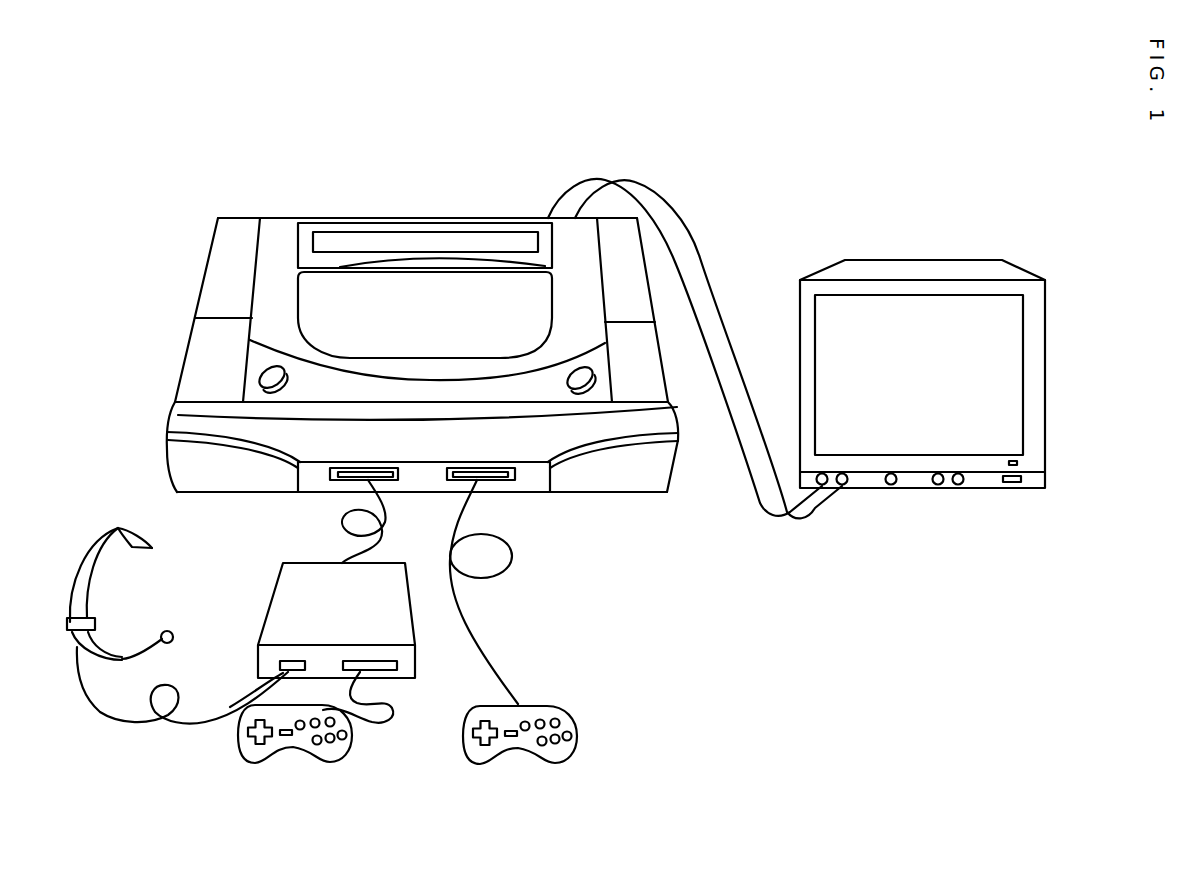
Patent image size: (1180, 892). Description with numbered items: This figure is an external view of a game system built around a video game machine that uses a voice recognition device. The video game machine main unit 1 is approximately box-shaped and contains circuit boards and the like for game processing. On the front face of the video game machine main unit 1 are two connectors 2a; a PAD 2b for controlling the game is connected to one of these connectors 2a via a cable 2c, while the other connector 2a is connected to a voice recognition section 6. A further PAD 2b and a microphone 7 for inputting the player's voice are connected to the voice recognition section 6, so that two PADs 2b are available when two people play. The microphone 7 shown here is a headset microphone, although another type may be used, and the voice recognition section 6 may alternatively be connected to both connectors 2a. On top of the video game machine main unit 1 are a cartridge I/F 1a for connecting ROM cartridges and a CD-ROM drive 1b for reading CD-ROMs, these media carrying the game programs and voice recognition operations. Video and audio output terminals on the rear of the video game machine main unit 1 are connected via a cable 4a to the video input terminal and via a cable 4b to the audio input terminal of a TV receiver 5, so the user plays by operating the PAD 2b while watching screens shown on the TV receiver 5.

The video game machine main unit 1 is at (172, 422).
The cartridge I/F 1a is at (340, 237).
The CD-ROM drive 1b is at (507, 285).
The connector 2a is at (340, 483).
The PAD 2b is at (247, 760).
The cable 2c is at (478, 657).
The cable 4a is at (703, 270).
The cable 4b is at (735, 436).
The TV receiver 5 is at (1047, 392).
The voice recognition section 6 is at (272, 605).
The microphone 7 is at (87, 592).